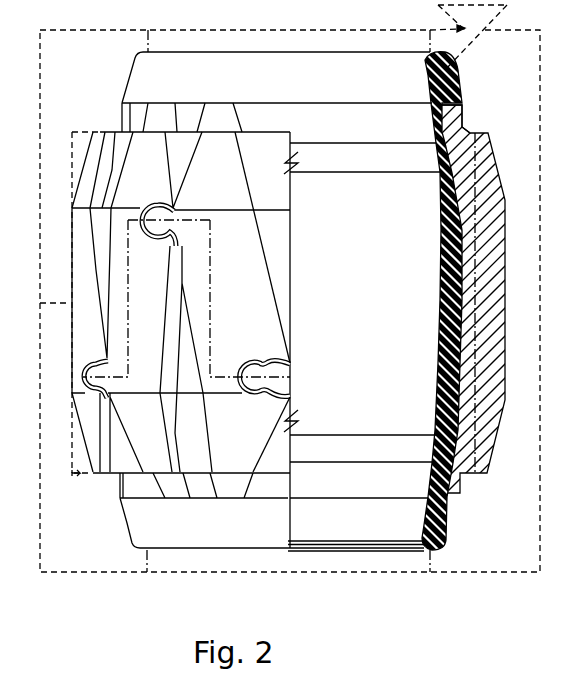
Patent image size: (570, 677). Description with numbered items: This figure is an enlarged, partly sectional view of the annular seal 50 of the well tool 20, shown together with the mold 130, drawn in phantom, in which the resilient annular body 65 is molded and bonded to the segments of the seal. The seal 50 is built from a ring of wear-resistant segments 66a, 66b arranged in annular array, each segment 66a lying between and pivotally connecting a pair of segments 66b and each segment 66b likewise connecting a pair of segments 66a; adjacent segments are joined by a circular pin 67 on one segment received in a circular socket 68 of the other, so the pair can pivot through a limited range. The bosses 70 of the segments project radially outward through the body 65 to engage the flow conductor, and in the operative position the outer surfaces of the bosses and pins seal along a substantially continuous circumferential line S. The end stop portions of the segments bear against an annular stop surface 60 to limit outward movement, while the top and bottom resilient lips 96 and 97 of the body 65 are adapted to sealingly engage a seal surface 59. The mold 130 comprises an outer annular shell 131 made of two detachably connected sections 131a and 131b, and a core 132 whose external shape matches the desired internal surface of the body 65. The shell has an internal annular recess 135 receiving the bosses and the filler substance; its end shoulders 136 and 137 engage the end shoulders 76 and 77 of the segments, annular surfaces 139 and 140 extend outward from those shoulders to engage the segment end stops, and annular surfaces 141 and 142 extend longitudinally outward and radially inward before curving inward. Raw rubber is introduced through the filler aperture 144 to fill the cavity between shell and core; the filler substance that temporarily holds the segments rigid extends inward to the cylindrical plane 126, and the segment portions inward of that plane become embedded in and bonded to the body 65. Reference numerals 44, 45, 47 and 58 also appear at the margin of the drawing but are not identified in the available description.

The well tool 20 is at (0, 457).
The conduit 44 is at (10, 596).
The conduit end 45 is at (17, 614).
The body 47 is at (10, 407).
The annular seal 50 is at (0, 670).
The seal 58 is at (10, 544).
The seal surface 59 is at (10, 526).
The annular stop surface 60 is at (10, 566).
The annular resilient body 65 is at (438, 260).
The segment 66a is at (153, 458).
The segment 66b is at (227, 492).
The pin 67 is at (257, 367).
The circular socket 68 is at (267, 393).
The boss 70 is at (253, 234).
The end shoulder 76 is at (442, 128).
The end shoulder 77 is at (432, 507).
The top annular resilient lip 96 is at (427, 73).
The bottom annular resilient lip 97 is at (322, 537).
The cylindrical plane 126 is at (478, 432).
The mold 130 is at (466, 575).
The outer annular shell 131 is at (520, 575).
The shell section 131a is at (80, 53).
The shell section 131b is at (107, 557).
The core 132 is at (382, 560).
The internal annular recess 135 is at (78, 475).
The annular end shoulder 136 is at (515, 122).
The annular end shoulder 137 is at (488, 467).
The annular surface 139 is at (458, 105).
The annular surface 140 is at (463, 493).
The annular surface 141 is at (455, 73).
The annular surface 142 is at (448, 540).
The filler aperture 144 is at (472, 40).
The line of sealing engagement S is at (210, 286).